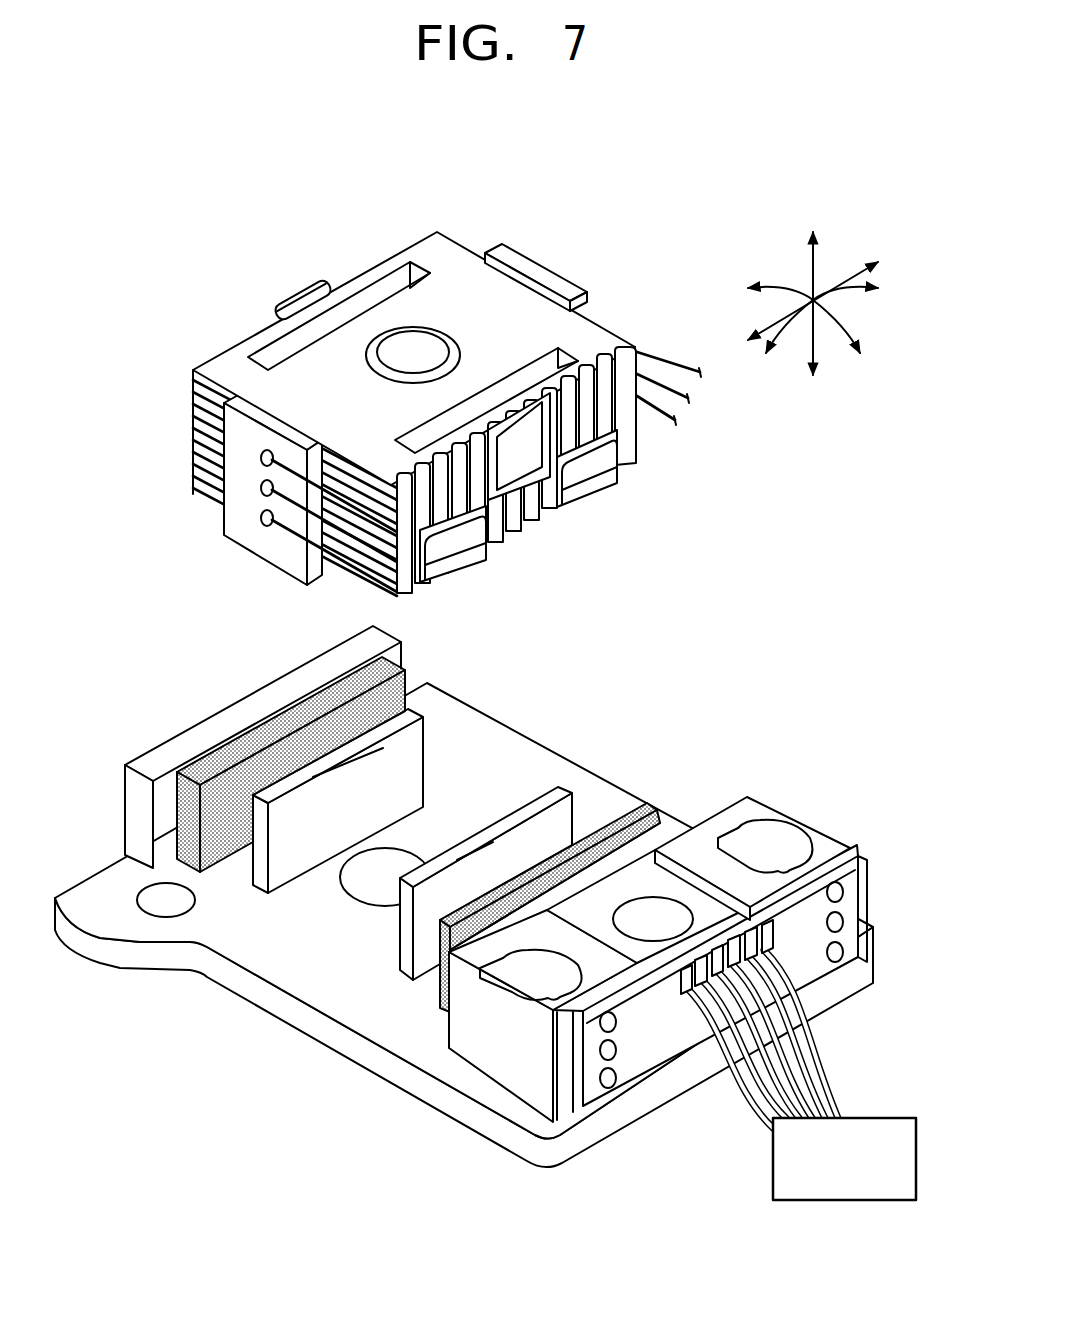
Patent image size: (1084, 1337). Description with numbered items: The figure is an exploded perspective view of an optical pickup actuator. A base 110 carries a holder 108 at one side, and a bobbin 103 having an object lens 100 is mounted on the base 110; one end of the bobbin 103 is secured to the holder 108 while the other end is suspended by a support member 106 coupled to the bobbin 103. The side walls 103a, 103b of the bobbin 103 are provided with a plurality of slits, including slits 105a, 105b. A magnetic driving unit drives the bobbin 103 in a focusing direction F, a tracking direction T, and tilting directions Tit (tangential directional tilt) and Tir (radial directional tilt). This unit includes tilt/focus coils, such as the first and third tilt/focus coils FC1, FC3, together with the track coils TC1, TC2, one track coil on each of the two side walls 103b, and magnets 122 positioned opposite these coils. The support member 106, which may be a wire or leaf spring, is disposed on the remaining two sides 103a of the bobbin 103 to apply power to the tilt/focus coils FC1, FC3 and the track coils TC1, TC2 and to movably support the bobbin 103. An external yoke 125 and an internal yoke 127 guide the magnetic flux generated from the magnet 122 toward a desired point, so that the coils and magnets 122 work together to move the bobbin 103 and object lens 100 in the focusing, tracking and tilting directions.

The object lens 100 is at (410, 340).
The bobbin 103 is at (452, 260).
The side wall of the bobbin 103a is at (190, 487).
The side wall of the bobbin 103b is at (632, 423).
The slit 105a is at (198, 433).
The slit 105b is at (415, 575).
The support member 106 is at (350, 572).
The holder 108 is at (493, 1057).
The base 110 is at (278, 1010).
The magnet 122 is at (263, 735).
The external yoke 125 is at (200, 735).
The internal yoke 127 is at (430, 722).
The track coil TC1 is at (490, 490).
The track coil TC2 is at (300, 297).
The first tilt/focus coil FC1 is at (482, 549).
The third tilt/focus coil FC3 is at (620, 463).
The focusing direction F is at (814, 285).
The tracking direction T is at (797, 309).
The tangential directional tilt Tit is at (786, 313).
The radial directional tilt Tir is at (839, 313).